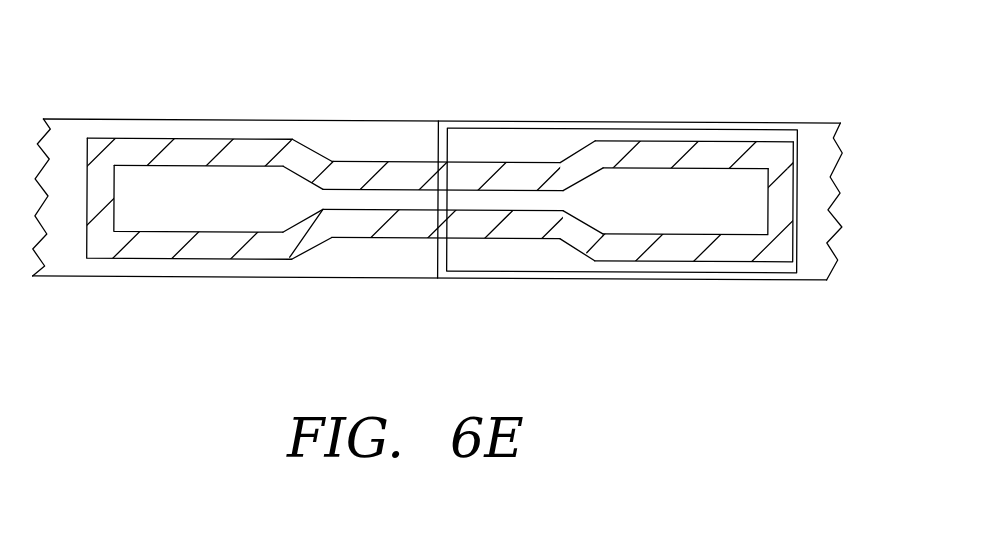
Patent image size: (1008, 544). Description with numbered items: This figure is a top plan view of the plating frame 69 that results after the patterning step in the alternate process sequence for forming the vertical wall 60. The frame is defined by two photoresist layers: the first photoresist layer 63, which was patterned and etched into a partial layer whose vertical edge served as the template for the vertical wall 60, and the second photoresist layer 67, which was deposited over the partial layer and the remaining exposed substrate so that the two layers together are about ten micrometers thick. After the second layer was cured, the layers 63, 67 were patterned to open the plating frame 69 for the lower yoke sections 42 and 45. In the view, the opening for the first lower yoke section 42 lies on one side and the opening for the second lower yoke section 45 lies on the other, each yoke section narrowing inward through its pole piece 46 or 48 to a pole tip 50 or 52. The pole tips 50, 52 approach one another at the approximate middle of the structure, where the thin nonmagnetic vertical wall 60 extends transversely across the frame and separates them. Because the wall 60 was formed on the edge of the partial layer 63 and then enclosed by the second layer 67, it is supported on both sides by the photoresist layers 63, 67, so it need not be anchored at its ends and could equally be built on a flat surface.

The lower yoke section 42 is at (137, 218).
The lower yoke section 45 is at (745, 223).
The pole piece 46 is at (287, 208).
The pole piece 48 is at (575, 200).
The pole tip 50 is at (423, 200).
The pole tip 52 is at (457, 200).
The vertical wall 60 is at (438, 121).
The photoresist layer 63 is at (521, 141).
The second photoresist layer 67 is at (62, 146).
The plating frame 69 is at (210, 147).